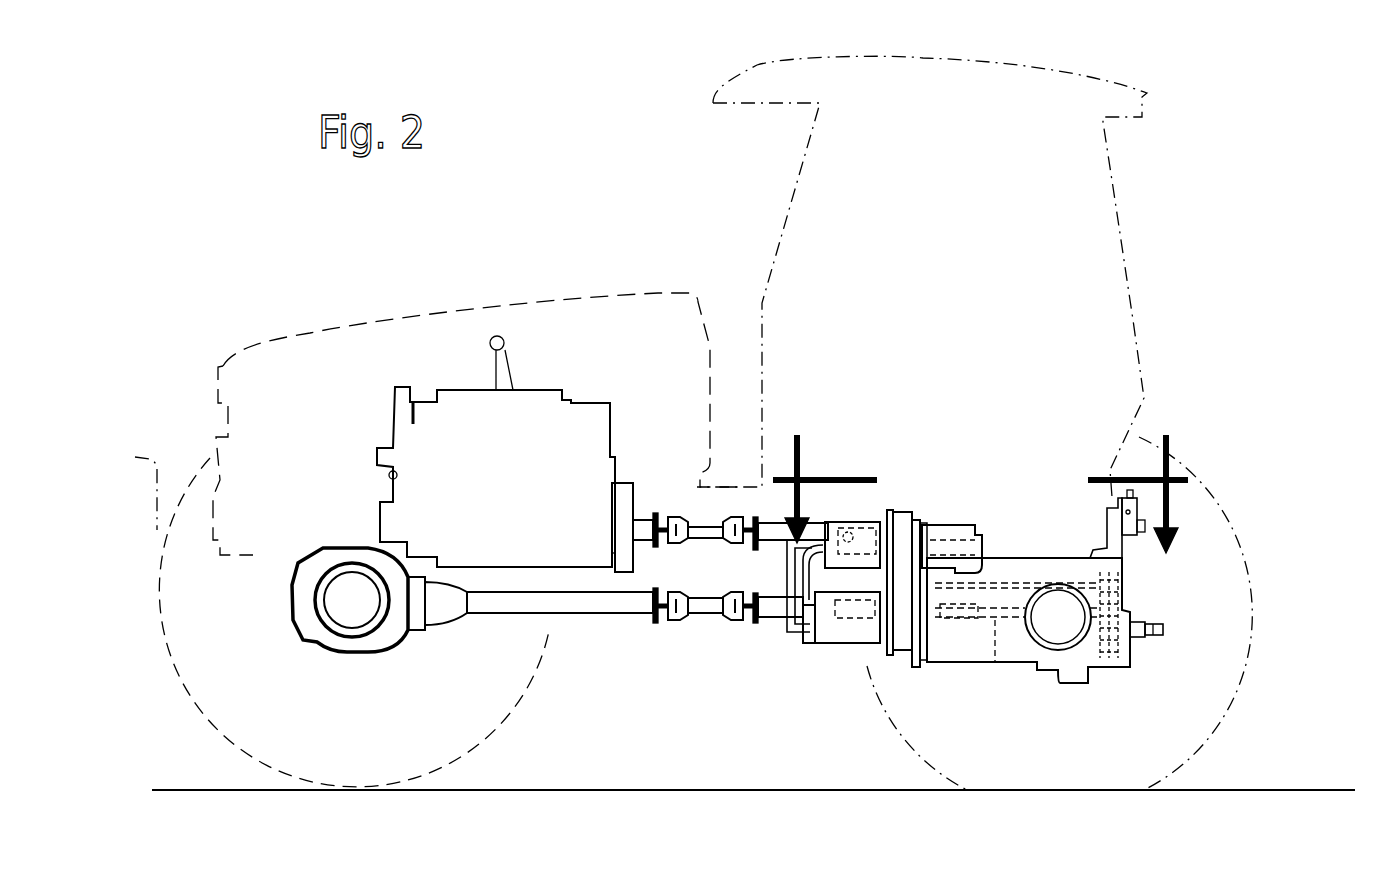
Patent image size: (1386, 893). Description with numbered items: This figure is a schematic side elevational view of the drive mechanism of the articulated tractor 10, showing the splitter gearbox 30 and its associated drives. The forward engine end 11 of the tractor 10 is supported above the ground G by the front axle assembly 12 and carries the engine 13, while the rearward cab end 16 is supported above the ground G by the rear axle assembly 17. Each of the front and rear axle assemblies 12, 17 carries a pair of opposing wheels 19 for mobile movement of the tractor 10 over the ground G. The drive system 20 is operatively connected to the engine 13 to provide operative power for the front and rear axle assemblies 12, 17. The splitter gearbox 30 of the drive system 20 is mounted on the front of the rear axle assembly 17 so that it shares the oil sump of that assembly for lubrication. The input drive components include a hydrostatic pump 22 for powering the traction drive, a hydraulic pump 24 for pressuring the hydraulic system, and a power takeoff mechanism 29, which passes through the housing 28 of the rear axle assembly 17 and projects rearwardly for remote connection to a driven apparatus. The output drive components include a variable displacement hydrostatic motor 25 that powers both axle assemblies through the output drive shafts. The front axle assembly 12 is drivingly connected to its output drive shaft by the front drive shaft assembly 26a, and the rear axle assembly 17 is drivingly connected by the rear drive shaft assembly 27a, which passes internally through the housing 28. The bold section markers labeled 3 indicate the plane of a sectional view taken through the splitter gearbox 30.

The articulated tractor 10 is at (1108, 182).
The forward engine end 11 is at (227, 295).
The front axle assembly 12 is at (300, 627).
The engine 13 is at (392, 413).
The rearward cab end 16 is at (1200, 364).
The rear axle assembly 17 is at (1052, 650).
The wheels 19 is at (1319, 501).
The drive system 20 is at (678, 702).
The hydrostatic pump 22 is at (862, 523).
The hydraulic pump 24 is at (968, 521).
The variable displacement hydrostatic motor 25 is at (843, 643).
The front drive shaft assembly 26a is at (605, 615).
The rear drive shaft assembly 27a is at (993, 668).
The housing 28 is at (943, 665).
The power takeoff (PTO) mechanism 29 is at (1166, 623).
The splitter gearbox 30 is at (907, 510).
The section line 3- 3 is at (980, 473).
The ground G is at (1283, 790).